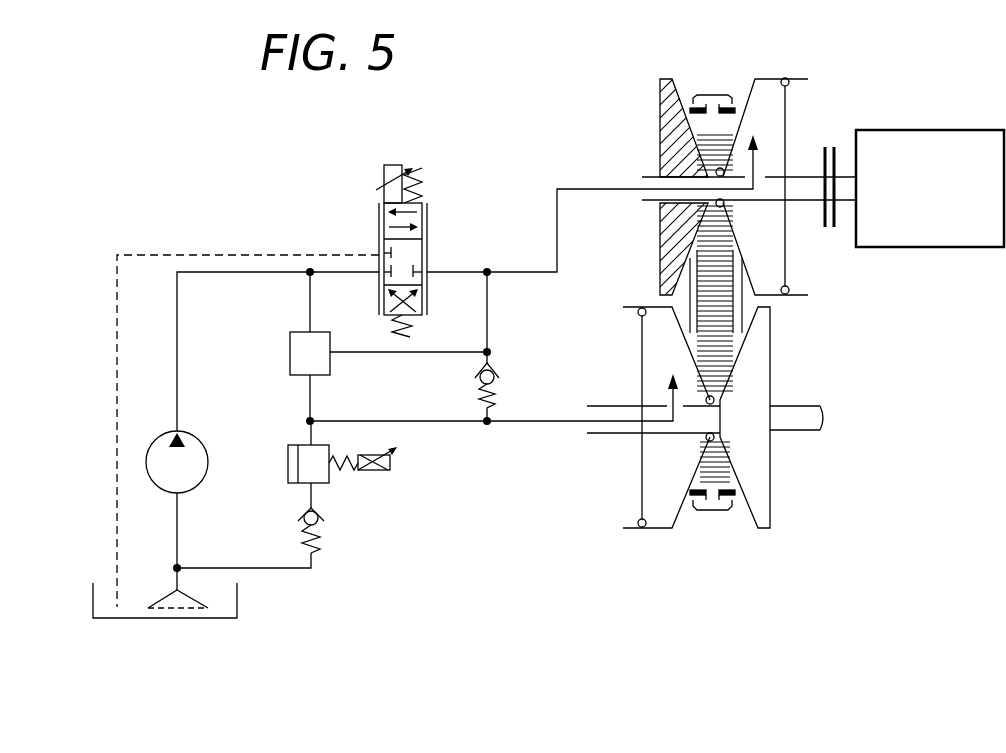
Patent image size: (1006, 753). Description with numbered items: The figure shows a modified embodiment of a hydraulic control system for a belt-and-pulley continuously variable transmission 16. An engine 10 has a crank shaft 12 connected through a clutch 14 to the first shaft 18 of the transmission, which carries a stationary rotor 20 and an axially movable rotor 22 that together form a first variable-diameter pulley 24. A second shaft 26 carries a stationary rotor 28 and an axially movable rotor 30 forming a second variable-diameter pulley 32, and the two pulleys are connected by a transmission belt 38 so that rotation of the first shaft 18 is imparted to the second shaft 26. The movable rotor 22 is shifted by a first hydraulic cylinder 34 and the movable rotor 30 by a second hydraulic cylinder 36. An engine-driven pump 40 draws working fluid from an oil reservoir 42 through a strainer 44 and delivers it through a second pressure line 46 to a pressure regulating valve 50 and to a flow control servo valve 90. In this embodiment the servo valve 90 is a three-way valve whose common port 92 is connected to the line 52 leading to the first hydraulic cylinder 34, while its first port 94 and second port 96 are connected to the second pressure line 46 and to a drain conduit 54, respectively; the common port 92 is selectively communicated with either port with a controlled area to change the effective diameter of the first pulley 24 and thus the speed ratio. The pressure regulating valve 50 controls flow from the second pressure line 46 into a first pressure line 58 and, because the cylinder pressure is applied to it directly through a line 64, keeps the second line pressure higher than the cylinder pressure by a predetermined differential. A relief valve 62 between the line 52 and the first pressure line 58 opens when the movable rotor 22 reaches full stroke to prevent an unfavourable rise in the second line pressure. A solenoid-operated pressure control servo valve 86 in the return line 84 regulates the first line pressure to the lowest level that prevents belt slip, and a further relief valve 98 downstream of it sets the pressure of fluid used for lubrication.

The engine 10 is at (948, 142).
The crank shaft 12 is at (843, 178).
The clutch 14 is at (836, 220).
The continuously variable transmission 16 is at (758, 450).
The first shaft 18 is at (804, 178).
The stationary rotor 20 is at (668, 90).
The axially movable rotor 22 is at (771, 78).
The first variable-diameter pulley 24 is at (679, 164).
The second shaft 26 is at (806, 428).
The stationary rotor 28 is at (768, 500).
The axially movable rotor 30 is at (664, 530).
The second variable-diameter pulley 32 is at (721, 450).
The first hydraulic cylinder 34 is at (786, 262).
The second hydraulic cylinder 36 is at (650, 490).
The transmission belt 38 is at (716, 520).
The pump 40 is at (200, 456).
The oil reservoir 42 is at (240, 600).
The strainer 44 is at (165, 592).
The second pressure line 46 is at (178, 318).
The pressure regulating valve 50 is at (300, 362).
The line 52 is at (586, 188).
The drain conduit 54 is at (215, 254).
The first pressure line 58 is at (428, 423).
The relief valve 62 is at (506, 384).
The line 64 is at (370, 354).
The return line 84 is at (306, 572).
The pressure control servo valve 86 is at (352, 482).
The flow control servo valve 90 is at (402, 229).
The common port 92 is at (427, 272).
The first port 94 is at (379, 273).
The second port 96 is at (379, 257).
The relief valve 98 is at (332, 533).